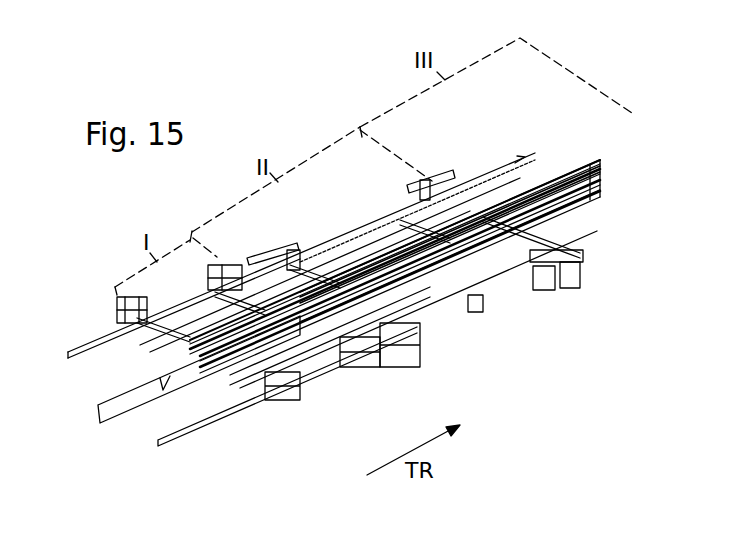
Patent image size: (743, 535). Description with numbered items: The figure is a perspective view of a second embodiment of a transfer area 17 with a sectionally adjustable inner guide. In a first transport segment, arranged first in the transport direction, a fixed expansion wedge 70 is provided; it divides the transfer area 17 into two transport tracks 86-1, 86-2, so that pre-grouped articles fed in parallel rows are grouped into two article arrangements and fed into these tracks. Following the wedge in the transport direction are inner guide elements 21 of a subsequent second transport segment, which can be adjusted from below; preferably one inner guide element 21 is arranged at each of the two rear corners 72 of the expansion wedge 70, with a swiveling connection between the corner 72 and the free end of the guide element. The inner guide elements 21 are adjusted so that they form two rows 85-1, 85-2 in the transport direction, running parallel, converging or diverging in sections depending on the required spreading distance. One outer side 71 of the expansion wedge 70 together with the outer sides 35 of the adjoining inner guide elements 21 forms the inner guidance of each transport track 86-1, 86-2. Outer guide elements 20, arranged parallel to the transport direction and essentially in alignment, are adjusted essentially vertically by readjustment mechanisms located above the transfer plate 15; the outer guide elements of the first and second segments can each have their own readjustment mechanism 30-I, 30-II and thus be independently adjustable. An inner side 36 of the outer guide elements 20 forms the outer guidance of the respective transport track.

The transfer plate 15 is at (495, 288).
The transfer area 17 is at (518, 352).
The outer guide elements 20 is at (482, 212).
The inner guide elements 21 is at (368, 278).
The readjustment mechanism of transport segment I 30-I is at (235, 380).
The readjustment mechanism of transport segment II 30-II is at (540, 237).
The outer sides of the inner guide elements 35 is at (412, 272).
The inner side of the outer guide elements 36 is at (408, 250).
The expansion wedge 70 is at (287, 320).
The outer side of the expansion wedge 71 is at (250, 342).
The rear corners of the expansion wedge 72 is at (317, 333).
The first row of inner guide elements 85-1 is at (578, 172).
The second row of inner guide elements 85-2 is at (598, 176).
The first transport track 86-1 is at (545, 185).
The second transport track 86-2 is at (593, 189).